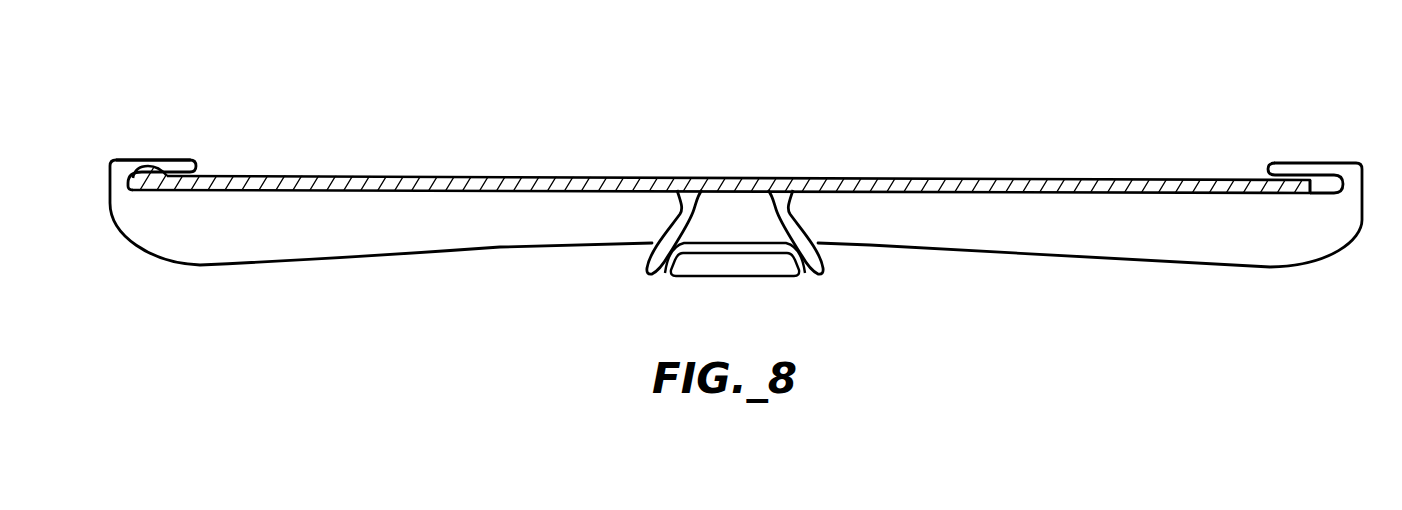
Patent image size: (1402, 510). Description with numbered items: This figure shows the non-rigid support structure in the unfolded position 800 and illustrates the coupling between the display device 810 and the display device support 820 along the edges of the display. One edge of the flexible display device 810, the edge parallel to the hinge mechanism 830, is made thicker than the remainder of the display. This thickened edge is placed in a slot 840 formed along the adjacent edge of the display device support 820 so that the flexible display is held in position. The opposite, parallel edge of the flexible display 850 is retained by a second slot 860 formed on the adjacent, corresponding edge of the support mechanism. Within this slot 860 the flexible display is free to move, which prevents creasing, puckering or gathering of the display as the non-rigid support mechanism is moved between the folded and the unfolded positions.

The unfolded position 800 is at (1213, 93).
The display device 810 is at (810, 177).
The display device support 820 is at (598, 247).
The hinge mechanism 830 is at (139, 169).
The slot 840 is at (168, 158).
The opposite edge of the flexible display 850 is at (1296, 193).
The slot 860 is at (1325, 181).